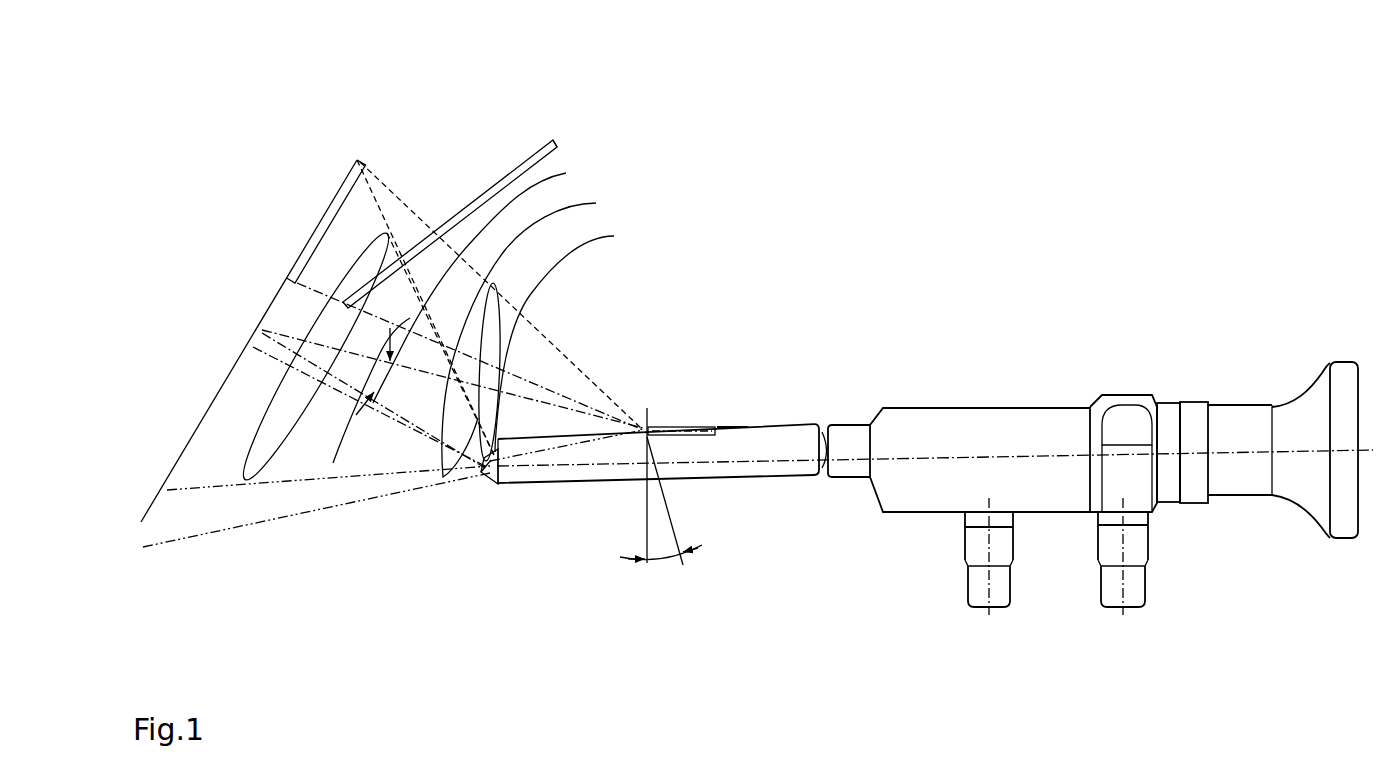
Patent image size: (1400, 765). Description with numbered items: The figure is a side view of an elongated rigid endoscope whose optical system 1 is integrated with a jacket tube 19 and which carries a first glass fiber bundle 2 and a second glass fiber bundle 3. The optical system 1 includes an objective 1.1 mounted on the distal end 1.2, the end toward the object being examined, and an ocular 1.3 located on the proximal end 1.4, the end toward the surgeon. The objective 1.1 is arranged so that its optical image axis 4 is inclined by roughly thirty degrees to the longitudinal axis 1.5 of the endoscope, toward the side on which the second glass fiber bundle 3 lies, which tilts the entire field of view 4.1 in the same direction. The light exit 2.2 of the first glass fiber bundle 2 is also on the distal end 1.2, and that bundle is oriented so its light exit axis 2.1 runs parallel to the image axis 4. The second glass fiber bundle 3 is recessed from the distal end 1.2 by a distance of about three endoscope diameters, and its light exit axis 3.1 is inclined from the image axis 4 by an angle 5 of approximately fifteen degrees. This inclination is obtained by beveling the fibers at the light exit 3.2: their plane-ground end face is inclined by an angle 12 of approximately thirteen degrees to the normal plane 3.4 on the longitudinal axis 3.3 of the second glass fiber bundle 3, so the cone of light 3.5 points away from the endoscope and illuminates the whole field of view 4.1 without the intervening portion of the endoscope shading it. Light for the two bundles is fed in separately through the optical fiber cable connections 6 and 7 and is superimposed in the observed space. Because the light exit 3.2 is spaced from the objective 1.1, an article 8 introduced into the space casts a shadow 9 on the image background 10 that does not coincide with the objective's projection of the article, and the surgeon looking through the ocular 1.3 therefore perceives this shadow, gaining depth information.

The optical system 1 is at (1135, 424).
The objective 1.1 is at (567, 340).
The distal end 1.2 is at (499, 486).
The ocular 1.3 is at (1347, 400).
The proximal end 1.4 is at (1345, 540).
The longitudinal axis 1.5 is at (747, 462).
The first glass fiber bundle 2 is at (488, 492).
The light exit axis 2.1 is at (333, 463).
The light exit 2.2 is at (482, 471).
The second glass fiber bundle 3 is at (697, 428).
The light exit axis 3.1 is at (563, 403).
The light exit 3.2 is at (648, 408).
The longitudinal axis 3.3 is at (735, 427).
The normal plane 3.4 is at (647, 523).
The cone of light 3.5 is at (541, 331).
The optical image axis 4 is at (372, 403).
The field of view 4.1 is at (250, 476).
The angle 5 is at (465, 271).
The optical fiber cable connection 6 is at (965, 543).
The optical fiber cable connection 7 is at (1148, 540).
The article 8 is at (557, 142).
The shadow 9 is at (317, 223).
The image background 10 is at (227, 377).
The angle 12 is at (662, 563).
The jacket tube 19 is at (837, 424).